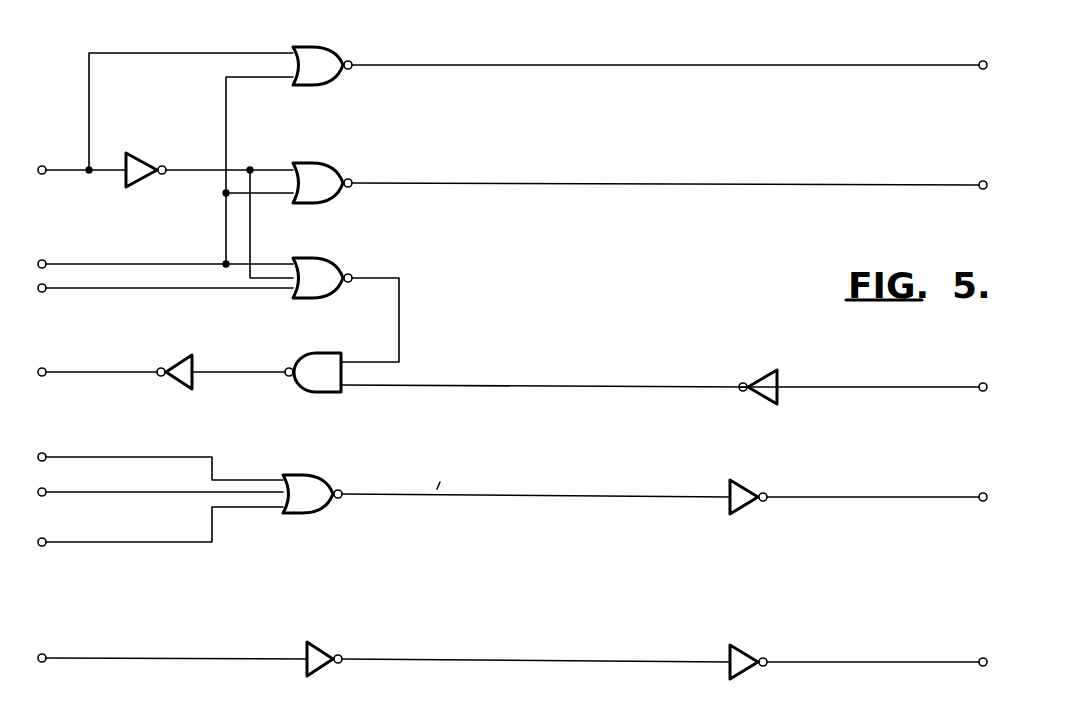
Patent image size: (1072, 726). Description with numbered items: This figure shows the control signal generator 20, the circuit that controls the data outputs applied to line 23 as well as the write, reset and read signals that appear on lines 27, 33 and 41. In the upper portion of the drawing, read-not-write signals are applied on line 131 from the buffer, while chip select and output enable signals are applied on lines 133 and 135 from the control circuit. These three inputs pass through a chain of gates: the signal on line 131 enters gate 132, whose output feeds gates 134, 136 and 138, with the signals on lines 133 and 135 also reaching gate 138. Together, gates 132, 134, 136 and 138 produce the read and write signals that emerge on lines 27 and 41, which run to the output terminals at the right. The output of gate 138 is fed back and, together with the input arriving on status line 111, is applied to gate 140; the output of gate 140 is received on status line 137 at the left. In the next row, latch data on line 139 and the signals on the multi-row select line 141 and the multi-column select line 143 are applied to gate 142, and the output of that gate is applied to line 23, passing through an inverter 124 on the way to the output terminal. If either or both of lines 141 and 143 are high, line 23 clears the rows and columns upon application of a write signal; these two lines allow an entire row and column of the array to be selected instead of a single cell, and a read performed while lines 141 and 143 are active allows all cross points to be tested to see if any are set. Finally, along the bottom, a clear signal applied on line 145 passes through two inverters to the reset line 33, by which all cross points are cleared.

The control signal generator 20 is at (990, 214).
The line 23 is at (899, 500).
The line 27 is at (732, 67).
The reset line 33 is at (852, 665).
The line 41 is at (709, 184).
The status line 111 is at (894, 390).
The inverter 124 is at (752, 500).
The line 131 is at (67, 168).
The gate 132 is at (155, 133).
The line 133 is at (115, 262).
The gate 134 is at (340, 68).
The line 135 is at (133, 290).
The gate 136 is at (328, 167).
The status line 137 is at (118, 376).
The gate 138 is at (323, 268).
The line 139 is at (196, 455).
The gate 140 is at (311, 360).
The multi-row select line 141 is at (136, 494).
The gate 142 is at (312, 510).
The multi-column select line 143 is at (181, 544).
The line 145 is at (177, 661).